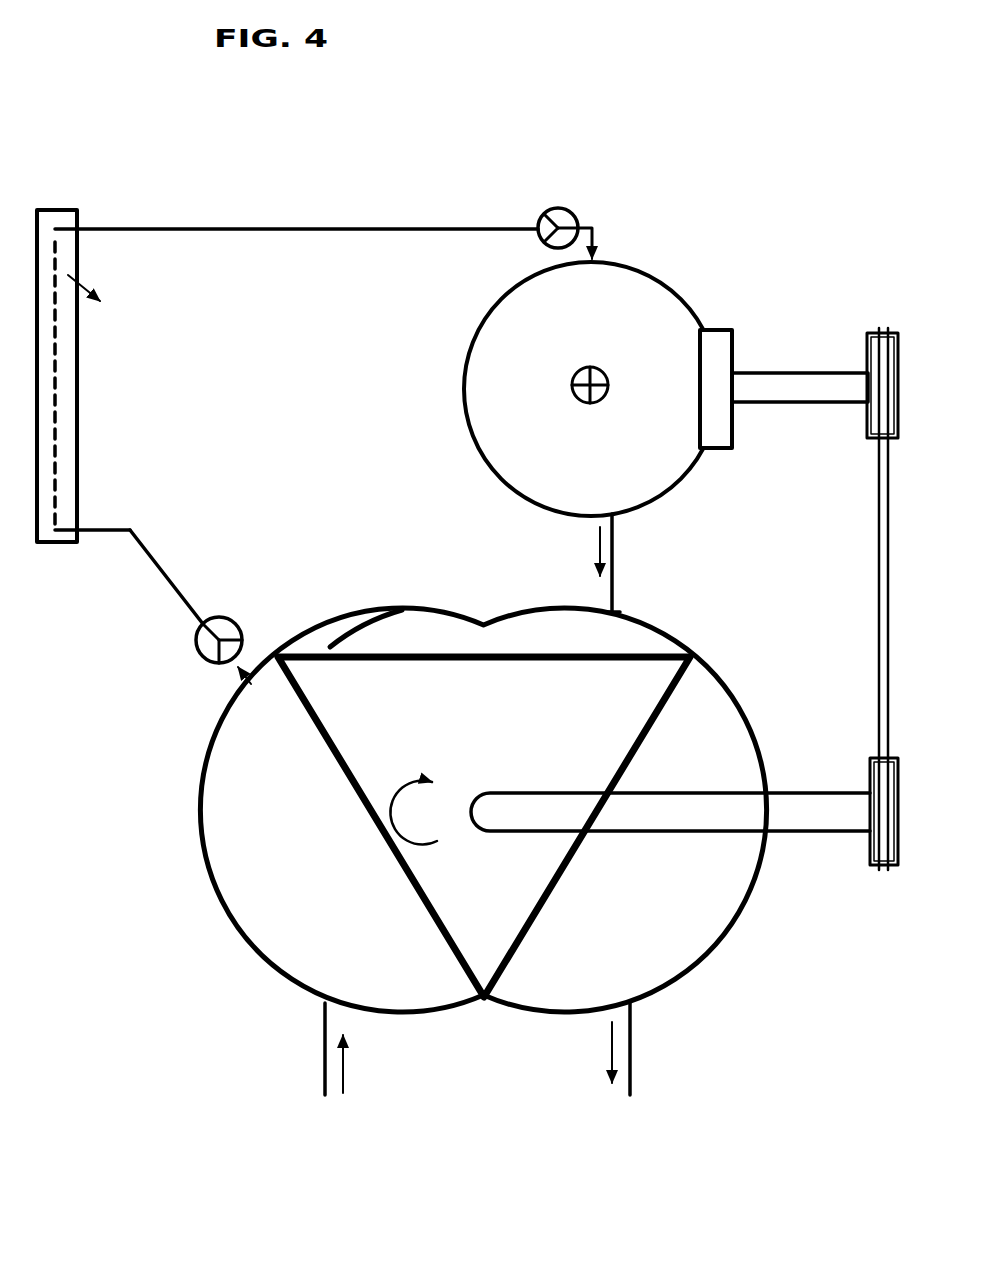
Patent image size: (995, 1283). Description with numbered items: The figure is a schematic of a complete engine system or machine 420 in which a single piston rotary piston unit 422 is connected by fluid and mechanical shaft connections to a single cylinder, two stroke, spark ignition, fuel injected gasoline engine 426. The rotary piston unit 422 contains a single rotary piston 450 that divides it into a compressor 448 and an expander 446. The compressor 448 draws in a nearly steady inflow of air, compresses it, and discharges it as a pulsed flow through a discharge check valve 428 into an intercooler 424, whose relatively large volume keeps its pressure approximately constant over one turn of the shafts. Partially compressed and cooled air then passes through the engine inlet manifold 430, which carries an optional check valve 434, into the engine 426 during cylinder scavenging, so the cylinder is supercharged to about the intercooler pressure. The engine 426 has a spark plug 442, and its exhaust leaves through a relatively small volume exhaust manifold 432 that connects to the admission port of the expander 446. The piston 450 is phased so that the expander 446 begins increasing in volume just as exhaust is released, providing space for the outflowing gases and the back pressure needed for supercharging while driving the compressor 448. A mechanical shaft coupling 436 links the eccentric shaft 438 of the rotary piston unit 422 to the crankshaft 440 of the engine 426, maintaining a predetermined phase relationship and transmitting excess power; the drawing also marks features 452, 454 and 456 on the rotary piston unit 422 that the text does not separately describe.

The machine with two stroke engine 420 is at (742, 230).
The rotary piston unit 422 is at (737, 918).
The intercooler 424 is at (78, 461).
The two stroke, single cylinder engine 426 is at (692, 308).
The discharge check valve 428 is at (198, 633).
The inlet manifold 430 is at (594, 229).
The engine exhaust manifold 432 is at (614, 531).
The check valve, engine inlet manifold 434 is at (538, 237).
The mechanical shaft coupling 436 is at (879, 546).
The eccentric shaft, rotary piston unit 438 is at (830, 791).
The crankshaft, engine 440 is at (765, 373).
The spark plug 442 is at (572, 381).
The expander, expander volume rotary piston unit 446 is at (718, 717).
The compressor, compressor volume rotary piston unit 448 is at (247, 725).
The piston, rotary piston unit 450 is at (398, 752).
The vessel wall 452 is at (352, 637).
The inlet port 454 is at (614, 612).
The outlet port 456 is at (250, 682).